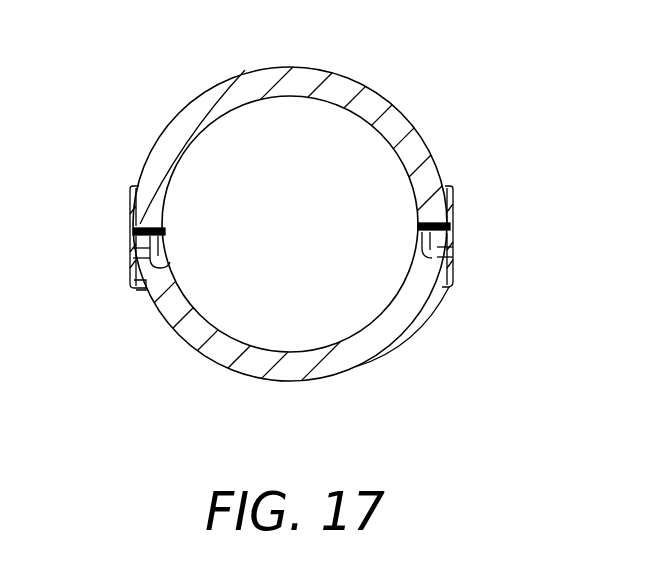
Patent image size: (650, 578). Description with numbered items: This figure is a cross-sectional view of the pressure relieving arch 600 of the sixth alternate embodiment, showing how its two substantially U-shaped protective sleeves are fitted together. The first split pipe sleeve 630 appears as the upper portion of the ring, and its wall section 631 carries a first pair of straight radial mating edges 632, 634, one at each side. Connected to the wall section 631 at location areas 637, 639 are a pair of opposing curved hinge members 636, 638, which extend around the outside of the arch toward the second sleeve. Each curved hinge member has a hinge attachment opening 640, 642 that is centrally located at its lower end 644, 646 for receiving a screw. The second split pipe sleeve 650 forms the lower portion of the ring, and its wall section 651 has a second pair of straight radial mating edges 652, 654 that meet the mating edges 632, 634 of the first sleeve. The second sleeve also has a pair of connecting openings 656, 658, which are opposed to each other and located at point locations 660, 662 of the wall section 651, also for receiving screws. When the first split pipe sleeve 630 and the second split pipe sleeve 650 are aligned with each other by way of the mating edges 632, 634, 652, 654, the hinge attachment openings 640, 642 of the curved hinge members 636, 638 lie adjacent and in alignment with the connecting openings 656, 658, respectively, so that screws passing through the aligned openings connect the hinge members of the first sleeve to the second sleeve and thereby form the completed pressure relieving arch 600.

The pressure relieving arch 600 is at (368, 58).
The first split pipe sleeve 630 is at (401, 105).
The wall section 631 is at (244, 66).
The first straight mating edge 632 is at (140, 223).
The second straight mating edge 634 is at (418, 237).
The curved hinge member 636 is at (132, 212).
The location area 637 is at (145, 178).
The curved hinge member 638 is at (453, 192).
The location area 639 is at (447, 187).
The hinge attachment opening 640 is at (121, 257).
The hinge attachment opening 642 is at (459, 248).
The lower end 644 is at (148, 272).
The lower end 646 is at (450, 280).
The second split pipe sleeve 650 is at (261, 380).
The wall section 651 is at (375, 358).
The first straight mating edge 652 is at (166, 224).
The second straight mating edge 654 is at (452, 205).
The connecting opening 656 is at (166, 272).
The connecting opening 658 is at (413, 264).
The point location 660 is at (153, 243).
The point location 662 is at (455, 258).